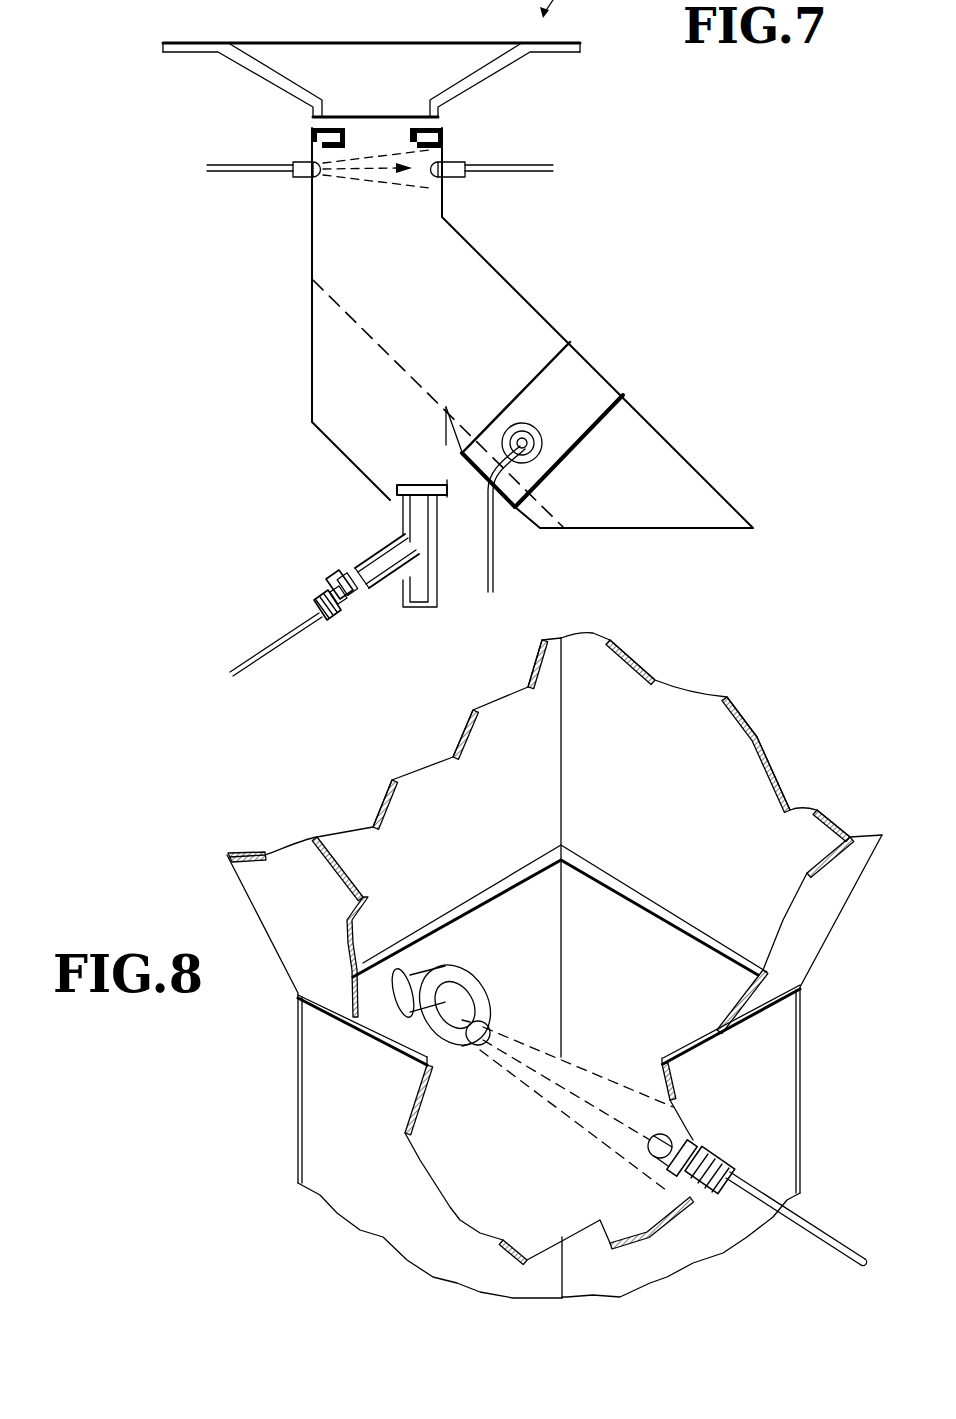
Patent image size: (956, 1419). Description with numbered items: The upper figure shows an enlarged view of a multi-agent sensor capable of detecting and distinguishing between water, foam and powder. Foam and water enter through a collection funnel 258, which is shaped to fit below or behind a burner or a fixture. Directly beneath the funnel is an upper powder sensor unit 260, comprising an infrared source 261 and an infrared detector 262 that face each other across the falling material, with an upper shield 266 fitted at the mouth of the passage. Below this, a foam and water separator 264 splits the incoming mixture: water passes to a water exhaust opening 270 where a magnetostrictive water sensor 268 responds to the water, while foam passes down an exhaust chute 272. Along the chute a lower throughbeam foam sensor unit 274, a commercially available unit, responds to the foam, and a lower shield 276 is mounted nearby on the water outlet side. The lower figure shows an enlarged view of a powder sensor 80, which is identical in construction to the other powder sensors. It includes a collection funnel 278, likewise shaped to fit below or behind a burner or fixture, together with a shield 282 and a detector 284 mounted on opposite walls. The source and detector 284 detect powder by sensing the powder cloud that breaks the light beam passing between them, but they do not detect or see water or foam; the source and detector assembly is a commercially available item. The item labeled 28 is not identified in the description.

In FIG. 7, the collection funnel 258 is at (575, 42).
In FIG. 7, the upper powder sensor unit 260 is at (295, 135).
In FIG. 7, the infrared source 261 is at (303, 178).
In FIG. 7, the infrared detector 262 is at (455, 178).
In FIG. 7, the foam and water separator 264 is at (355, 323).
In FIG. 7, the upper shield 266 is at (443, 131).
In FIG. 7, the magnetostrictive water sensor 268 is at (344, 573).
In FIG. 7, the water exhaust opening 270 is at (422, 610).
In FIG. 7, the exhaust chute 272 is at (700, 530).
In FIG. 7, the lower throughbeam foam sensor unit 274 is at (542, 440).
In FIG. 7, the lower shield 276 is at (430, 482).
In FIG. 8, the collection funnel 278 is at (650, 697).
In FIG. 8, the powder sensor 80 is at (772, 739).
In FIG. 8, the shield 282 is at (473, 985).
In FIG. 8, the sensor 28 is at (470, 1047).
In FIG. 8, the detector 284 is at (687, 1130).